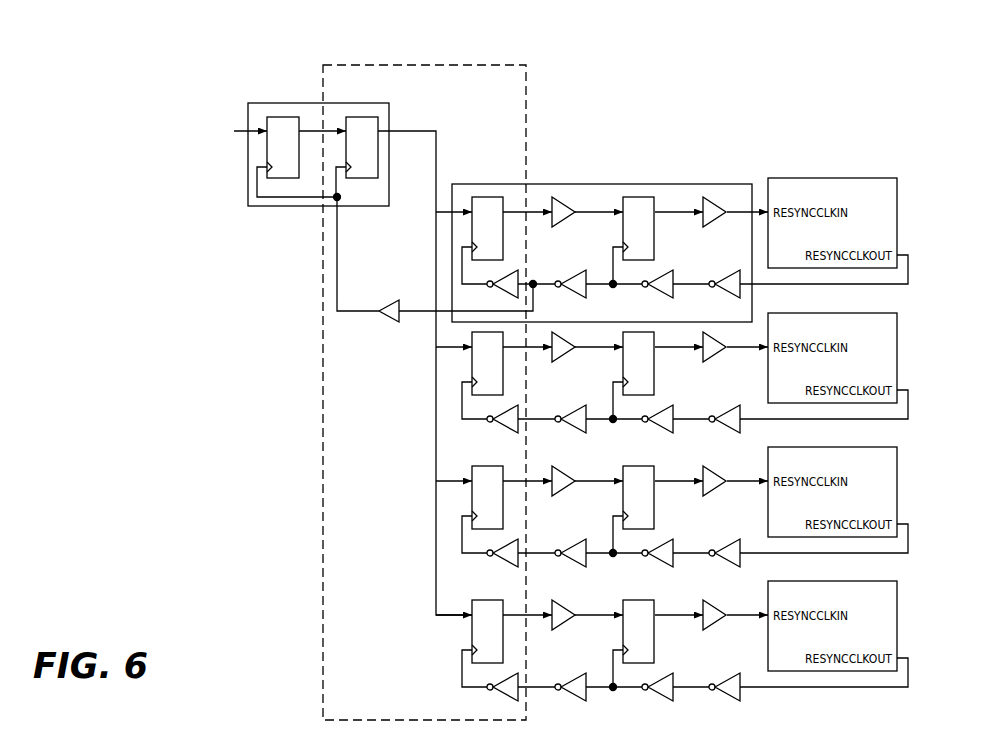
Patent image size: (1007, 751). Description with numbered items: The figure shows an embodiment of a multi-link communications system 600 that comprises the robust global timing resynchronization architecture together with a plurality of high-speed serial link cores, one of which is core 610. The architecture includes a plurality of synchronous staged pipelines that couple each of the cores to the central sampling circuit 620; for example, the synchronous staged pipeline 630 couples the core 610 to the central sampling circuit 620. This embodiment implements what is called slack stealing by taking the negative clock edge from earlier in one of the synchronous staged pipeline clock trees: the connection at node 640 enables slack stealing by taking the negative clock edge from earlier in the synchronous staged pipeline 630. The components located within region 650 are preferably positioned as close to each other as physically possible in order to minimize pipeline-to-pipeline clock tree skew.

The multi-link communications system 600 is at (113, 67).
The core 610 is at (883, 190).
The central sampling circuit 620 is at (243, 187).
The synchronous staged pipeline 630 is at (702, 180).
The node 640 is at (493, 307).
The region 650 is at (313, 692).